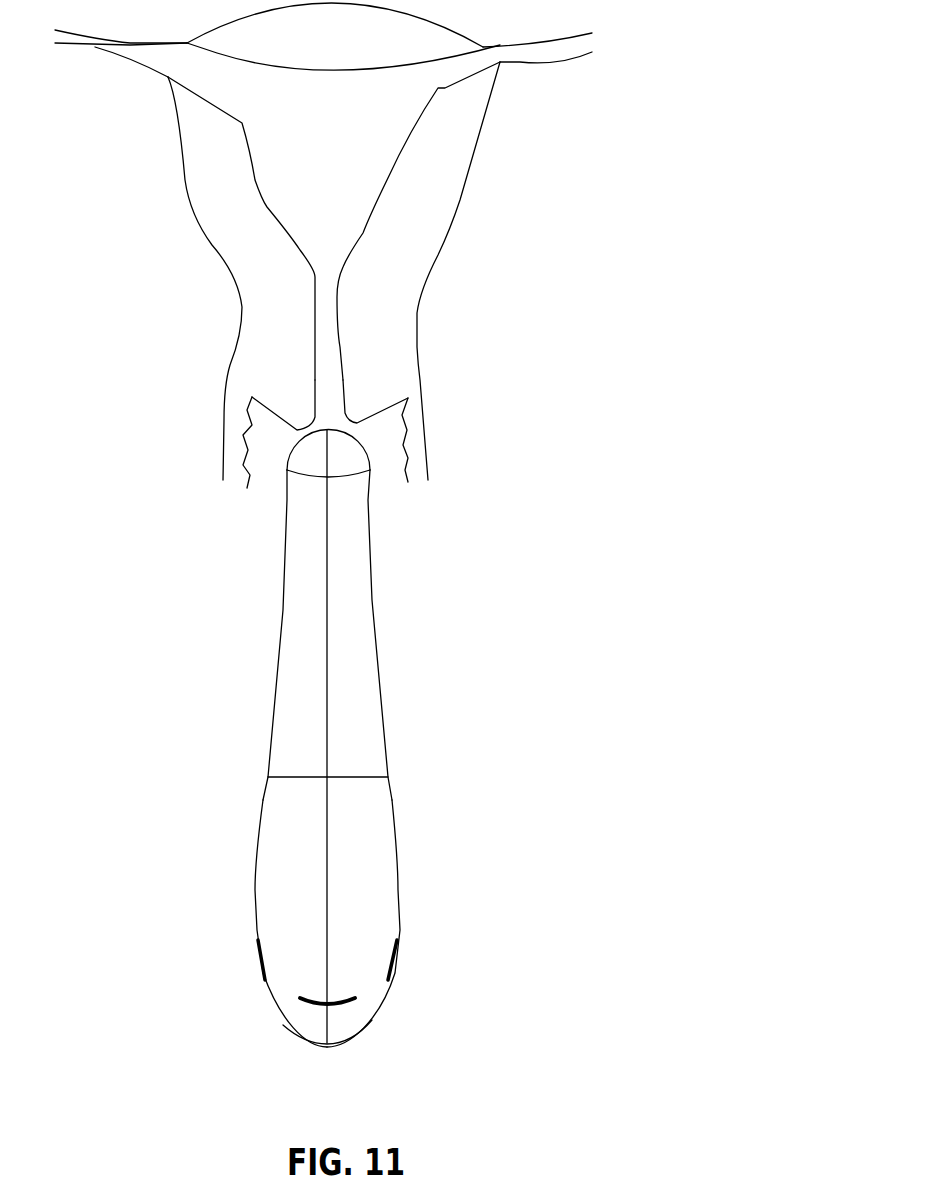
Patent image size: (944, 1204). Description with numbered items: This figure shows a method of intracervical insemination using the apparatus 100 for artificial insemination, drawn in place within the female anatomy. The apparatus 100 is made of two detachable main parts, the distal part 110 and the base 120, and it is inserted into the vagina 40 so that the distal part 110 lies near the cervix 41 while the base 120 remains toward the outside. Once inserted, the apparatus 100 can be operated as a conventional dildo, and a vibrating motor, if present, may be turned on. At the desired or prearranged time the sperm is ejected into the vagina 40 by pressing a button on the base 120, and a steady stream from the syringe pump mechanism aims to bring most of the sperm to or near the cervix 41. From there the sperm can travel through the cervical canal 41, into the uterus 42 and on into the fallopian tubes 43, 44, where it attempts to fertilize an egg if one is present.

The vagina 40 is at (263, 457).
The cervix 41 is at (328, 395).
The uterus 42 is at (332, 155).
The fallopian tube 43 is at (533, 53).
The fallopian tube 44 is at (100, 48).
The apparatus 100 is at (370, 738).
The distal main part 110 is at (303, 638).
The base 120 is at (302, 922).